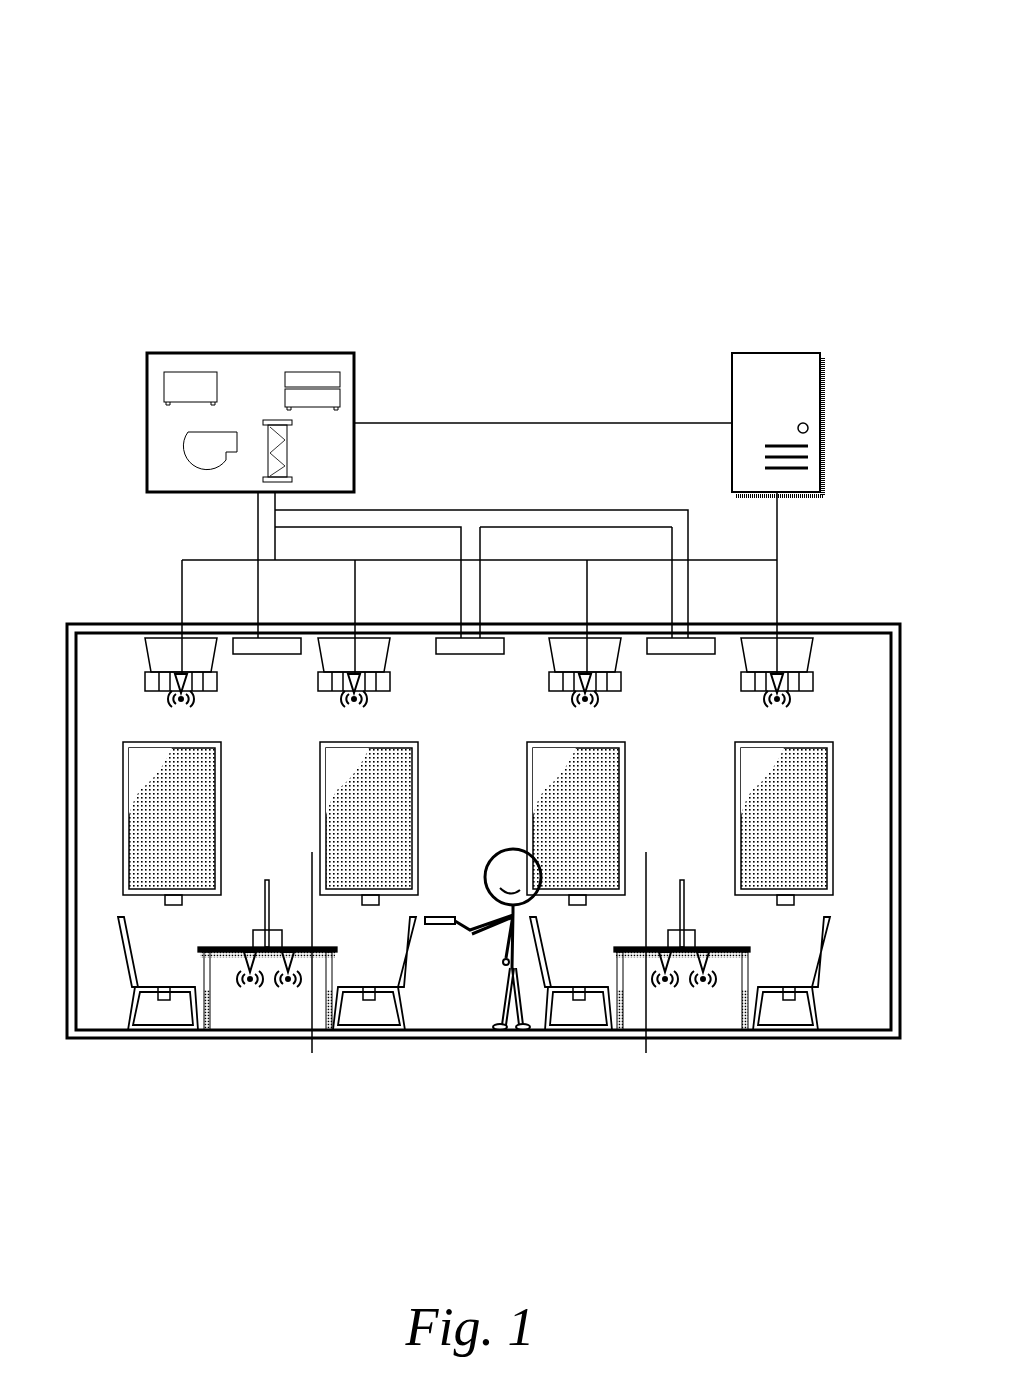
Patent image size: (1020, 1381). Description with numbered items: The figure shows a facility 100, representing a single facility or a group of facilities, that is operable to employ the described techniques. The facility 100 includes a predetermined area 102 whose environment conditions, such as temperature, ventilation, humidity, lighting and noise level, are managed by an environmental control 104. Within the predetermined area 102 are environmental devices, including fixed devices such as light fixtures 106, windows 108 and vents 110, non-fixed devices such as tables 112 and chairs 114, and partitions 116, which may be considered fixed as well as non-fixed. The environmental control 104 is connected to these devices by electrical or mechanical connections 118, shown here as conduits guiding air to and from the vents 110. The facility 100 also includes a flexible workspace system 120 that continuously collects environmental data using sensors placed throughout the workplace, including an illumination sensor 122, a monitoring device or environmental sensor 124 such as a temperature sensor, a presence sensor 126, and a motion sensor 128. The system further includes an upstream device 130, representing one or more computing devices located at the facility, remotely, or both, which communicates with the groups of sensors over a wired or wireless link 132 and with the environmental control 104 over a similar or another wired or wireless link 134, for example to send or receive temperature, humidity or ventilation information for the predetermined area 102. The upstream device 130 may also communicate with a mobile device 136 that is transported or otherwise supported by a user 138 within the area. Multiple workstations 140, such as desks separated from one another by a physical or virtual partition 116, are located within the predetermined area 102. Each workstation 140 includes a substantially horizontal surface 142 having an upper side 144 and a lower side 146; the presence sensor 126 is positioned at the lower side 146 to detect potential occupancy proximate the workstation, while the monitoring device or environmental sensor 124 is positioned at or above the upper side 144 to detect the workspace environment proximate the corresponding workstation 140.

The facility 100 is at (143, 68).
The predetermined area 102 is at (108, 652).
The environmental control 104 is at (248, 352).
The light fixture 106 is at (217, 680).
The window 108 is at (163, 758).
The vent 110 is at (253, 638).
The table 112 is at (205, 972).
The chair 114 is at (133, 978).
The partition 116 is at (265, 893).
The electrical or mechanical connection 118 is at (475, 510).
The flexible workspace system 120 is at (802, 322).
The illumination sensor 122 is at (172, 696).
The monitoring device or environmental sensor 124 is at (172, 893).
The presence sensor 126 is at (288, 992).
The motion sensor 128 is at (166, 1000).
The upstream device 130 is at (775, 352).
The wired or wireless link 132 is at (777, 540).
The wired or wireless link 134 is at (600, 423).
The mobile device 136 is at (437, 927).
The user 138 is at (500, 1030).
The workstation 140 is at (195, 935).
The substantially horizontal surface 142 is at (328, 948).
The upper side 144 is at (312, 852).
The lower side 146 is at (312, 1053).